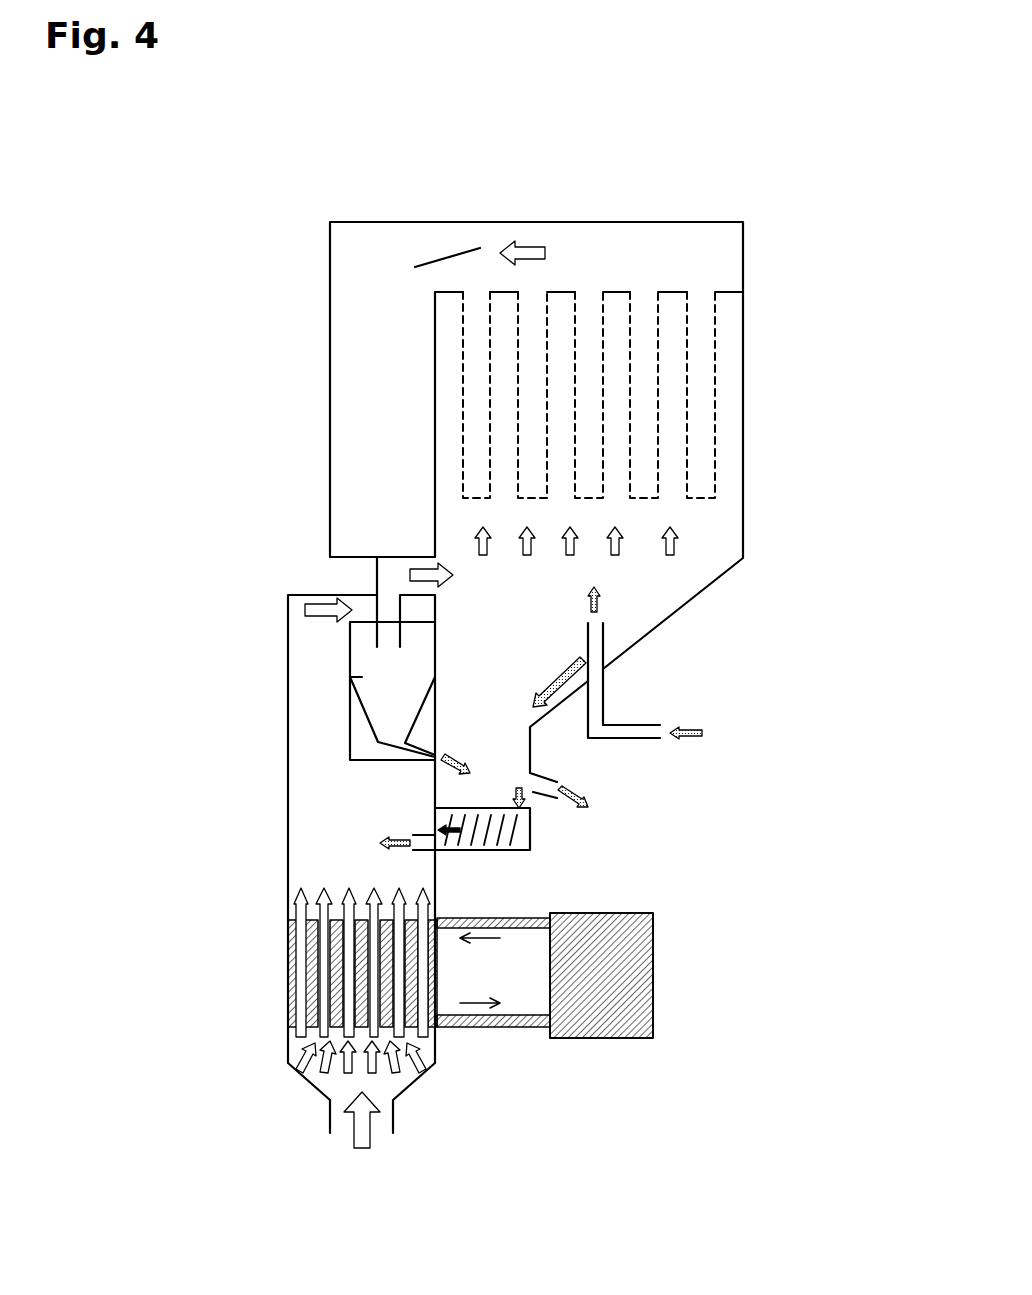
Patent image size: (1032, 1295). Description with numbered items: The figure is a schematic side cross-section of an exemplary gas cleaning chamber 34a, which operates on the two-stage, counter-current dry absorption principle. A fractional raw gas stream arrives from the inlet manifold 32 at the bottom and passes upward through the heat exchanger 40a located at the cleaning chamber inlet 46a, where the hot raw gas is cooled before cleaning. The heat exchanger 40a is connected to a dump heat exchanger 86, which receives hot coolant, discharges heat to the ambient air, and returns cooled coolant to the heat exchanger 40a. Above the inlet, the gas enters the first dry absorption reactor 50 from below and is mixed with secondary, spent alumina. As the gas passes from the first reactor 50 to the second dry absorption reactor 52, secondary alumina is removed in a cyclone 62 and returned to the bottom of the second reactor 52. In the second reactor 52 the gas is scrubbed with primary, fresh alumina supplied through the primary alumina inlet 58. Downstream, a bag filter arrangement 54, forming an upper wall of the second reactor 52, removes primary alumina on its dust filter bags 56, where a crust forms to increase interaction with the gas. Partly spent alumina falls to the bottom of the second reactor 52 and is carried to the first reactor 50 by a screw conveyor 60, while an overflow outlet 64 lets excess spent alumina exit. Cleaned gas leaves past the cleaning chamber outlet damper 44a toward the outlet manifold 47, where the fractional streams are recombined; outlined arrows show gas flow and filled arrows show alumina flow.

The cleaning chamber 34a is at (788, 107).
The cleaning chamber outlet damper 44a is at (447, 256).
The outlet manifold 47 is at (437, 414).
The dust filter bags 56 is at (715, 367).
The bag filter arrangement 54 is at (662, 395).
The second dry absorption reactor 52 is at (576, 571).
The cyclone 62 is at (367, 672).
The primary alumina inlet 58 is at (627, 725).
The overflow outlet 64 is at (548, 780).
The first dry absorption reactor 50 is at (361, 845).
The screw conveyor 60 is at (497, 833).
The cleaning chamber inlet 46a is at (287, 912).
The heat exchanger 40a is at (305, 975).
The dump heat exchanger 86 is at (620, 980).
The inlet manifold 32 is at (393, 1113).